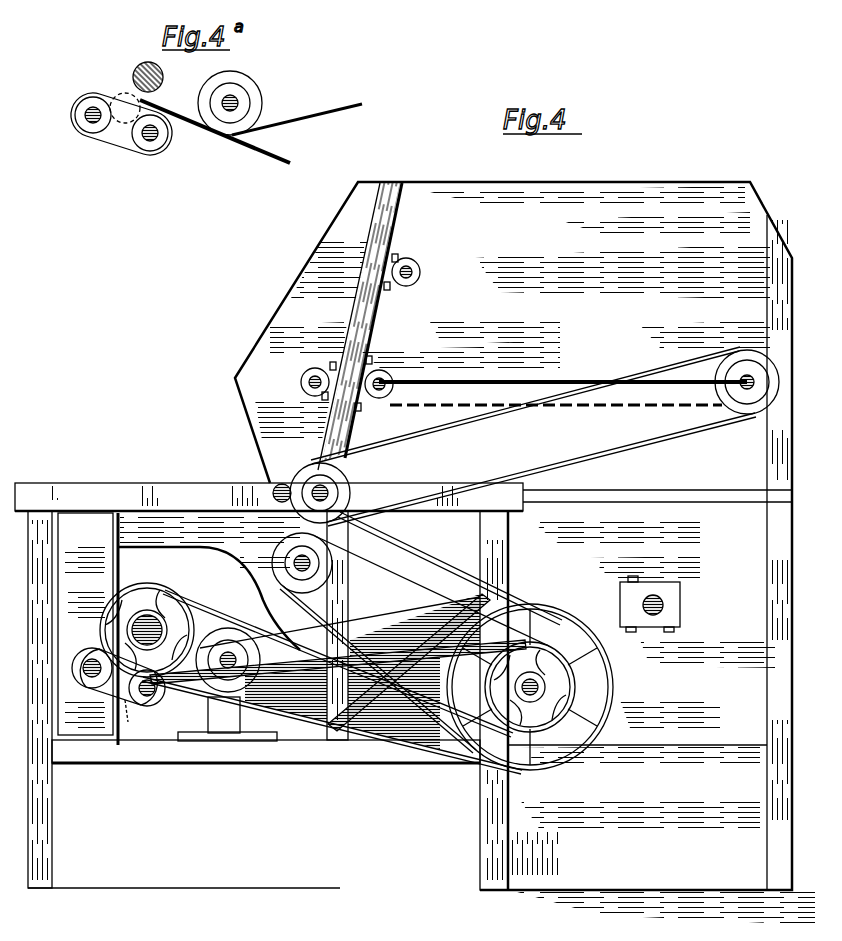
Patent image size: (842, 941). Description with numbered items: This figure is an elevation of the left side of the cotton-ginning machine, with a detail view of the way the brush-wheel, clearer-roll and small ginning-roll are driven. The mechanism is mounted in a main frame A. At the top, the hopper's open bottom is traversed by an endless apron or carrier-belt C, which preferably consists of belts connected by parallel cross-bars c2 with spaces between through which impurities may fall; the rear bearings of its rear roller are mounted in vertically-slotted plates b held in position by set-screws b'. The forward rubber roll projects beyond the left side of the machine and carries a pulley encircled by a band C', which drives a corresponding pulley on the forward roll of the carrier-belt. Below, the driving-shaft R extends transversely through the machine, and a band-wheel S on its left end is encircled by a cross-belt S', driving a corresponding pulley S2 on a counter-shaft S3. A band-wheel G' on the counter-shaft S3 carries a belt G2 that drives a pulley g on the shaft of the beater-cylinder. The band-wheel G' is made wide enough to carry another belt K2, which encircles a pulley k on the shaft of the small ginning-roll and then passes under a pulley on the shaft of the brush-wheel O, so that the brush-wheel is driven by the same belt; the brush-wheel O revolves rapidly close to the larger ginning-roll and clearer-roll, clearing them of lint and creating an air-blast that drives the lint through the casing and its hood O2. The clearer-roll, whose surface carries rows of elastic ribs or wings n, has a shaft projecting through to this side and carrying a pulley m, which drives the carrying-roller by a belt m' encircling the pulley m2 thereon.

In FIG. 4, the main frame A is at (330, 234).
In FIG. 4, the vertically-slotted plates b is at (396, 303).
In FIG. 4, the set-screws b' is at (358, 391).
In FIG. 4, the endless apron or carrier-belt C is at (579, 386).
In FIG. 4, the parallel cross-bars c2 is at (556, 415).
In FIG. 4, the band C' is at (533, 436).
In FIG. 4, the pulley g is at (285, 563).
In FIG. 4, the belt G2 is at (438, 579).
In FIG. 4, the hood O2 is at (410, 630).
In FIG. 4, the band-wheel S is at (147, 616).
In FIG. 4A, the driving-shaft R is at (163, 78).
In FIG. 4, the driving-shaft R is at (155, 622).
In FIG. 4A, the pulley m2 is at (82, 108).
In FIG. 4, the pulley m2 is at (88, 652).
In FIG. 4, the pulley m is at (147, 699).
In FIG. 4A, the belt m' is at (121, 128).
In FIG. 4, the belt m' is at (118, 682).
In FIG. 4A, the pulley k is at (120, 94).
In FIG. 4, the pulley k is at (125, 719).
In FIG. 4A, the ribs or wings n is at (150, 145).
In FIG. 4A, the brush-wheel O is at (244, 90).
In FIG. 4, the brush-wheel O is at (228, 655).
In FIG. 4, the cross-belt S' is at (338, 663).
In FIG. 4A, the belt K2 is at (258, 176).
In FIG. 4, the belt K2 is at (340, 758).
In FIG. 4, the band-wheel G' is at (530, 687).
In FIG. 4, the counter-shaft S3 is at (560, 666).
In FIG. 4, the pulley S2 is at (546, 730).